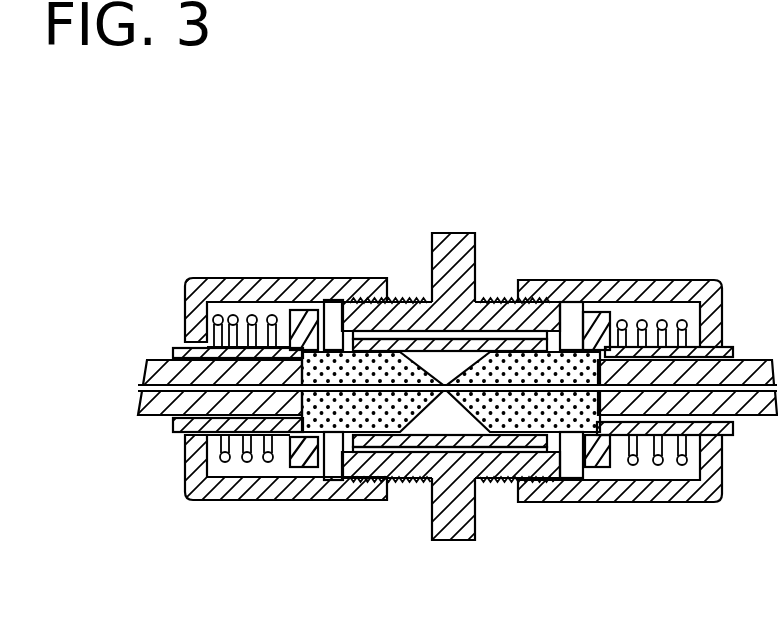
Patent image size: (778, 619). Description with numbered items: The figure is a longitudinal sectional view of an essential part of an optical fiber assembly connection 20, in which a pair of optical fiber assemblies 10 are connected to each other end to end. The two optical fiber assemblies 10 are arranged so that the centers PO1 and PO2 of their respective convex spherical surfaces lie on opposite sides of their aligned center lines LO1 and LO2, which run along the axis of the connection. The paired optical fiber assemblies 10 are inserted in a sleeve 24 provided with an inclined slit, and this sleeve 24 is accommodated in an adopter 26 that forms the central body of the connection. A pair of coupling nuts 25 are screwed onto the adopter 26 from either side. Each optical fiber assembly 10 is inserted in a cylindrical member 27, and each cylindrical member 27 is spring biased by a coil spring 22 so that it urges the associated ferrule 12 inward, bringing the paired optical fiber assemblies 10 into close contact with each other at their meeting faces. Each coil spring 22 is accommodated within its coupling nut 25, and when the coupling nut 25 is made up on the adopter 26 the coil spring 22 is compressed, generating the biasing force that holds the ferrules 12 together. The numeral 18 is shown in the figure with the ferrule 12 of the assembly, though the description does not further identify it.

The optical fiber assembly 10 is at (427, 166).
The ferrule 12 is at (330, 367).
The optical fiber 18 is at (398, 382).
The optical fiber assembly connection 20 is at (260, 114).
The coil spring 22 is at (232, 318).
The sleeve 24 is at (482, 336).
The coupling nut 25 is at (573, 301).
The adopter 26 is at (460, 233).
The cylindrical member 27 is at (595, 313).
The center of convex spherical surface PO1 is at (357, 368).
The center of convex spherical surface PO2 is at (553, 412).
The center line LO1 is at (443, 386).
The center line LO2 is at (493, 373).